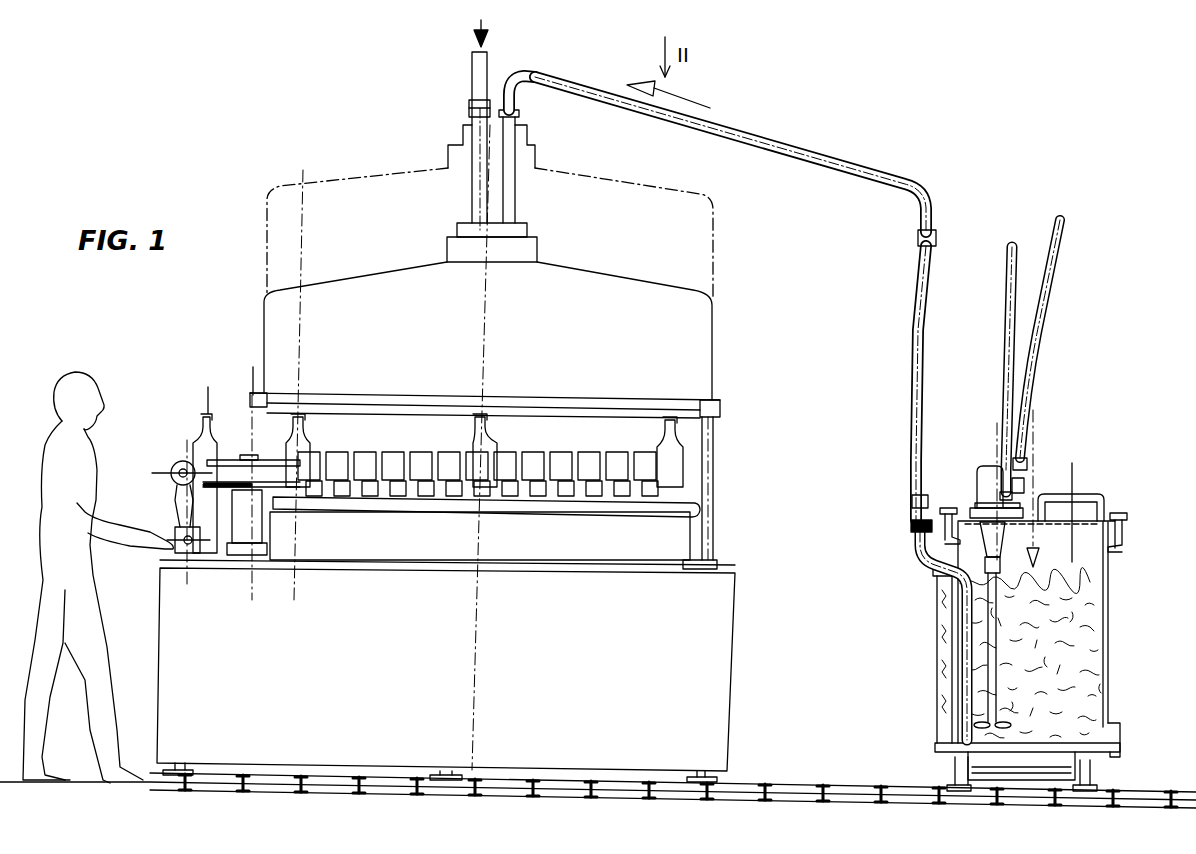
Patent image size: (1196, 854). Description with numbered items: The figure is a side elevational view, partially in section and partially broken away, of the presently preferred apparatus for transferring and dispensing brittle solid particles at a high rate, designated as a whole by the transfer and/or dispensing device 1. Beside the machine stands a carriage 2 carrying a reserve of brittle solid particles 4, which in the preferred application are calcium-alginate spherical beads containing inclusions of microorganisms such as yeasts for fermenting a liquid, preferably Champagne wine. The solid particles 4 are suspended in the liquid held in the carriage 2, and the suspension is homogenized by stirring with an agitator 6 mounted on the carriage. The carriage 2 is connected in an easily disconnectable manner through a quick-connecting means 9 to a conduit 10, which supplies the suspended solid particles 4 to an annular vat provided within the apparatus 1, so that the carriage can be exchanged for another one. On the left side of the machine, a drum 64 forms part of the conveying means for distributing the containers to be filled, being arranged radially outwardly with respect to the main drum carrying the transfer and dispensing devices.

The transfer and/or dispensing device 1 is at (688, 340).
The carriage 2 is at (1113, 634).
The brittle solid particles 4 is at (1070, 677).
The agitator 6 is at (980, 493).
The quick-connecting means 9 is at (911, 527).
The conduit 10 is at (779, 148).
The drum 64 is at (233, 452).